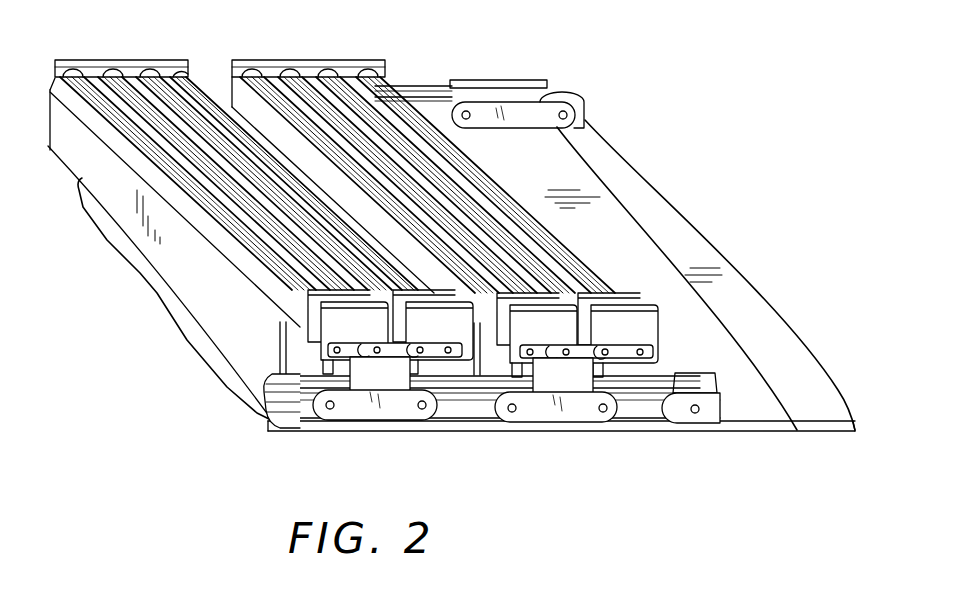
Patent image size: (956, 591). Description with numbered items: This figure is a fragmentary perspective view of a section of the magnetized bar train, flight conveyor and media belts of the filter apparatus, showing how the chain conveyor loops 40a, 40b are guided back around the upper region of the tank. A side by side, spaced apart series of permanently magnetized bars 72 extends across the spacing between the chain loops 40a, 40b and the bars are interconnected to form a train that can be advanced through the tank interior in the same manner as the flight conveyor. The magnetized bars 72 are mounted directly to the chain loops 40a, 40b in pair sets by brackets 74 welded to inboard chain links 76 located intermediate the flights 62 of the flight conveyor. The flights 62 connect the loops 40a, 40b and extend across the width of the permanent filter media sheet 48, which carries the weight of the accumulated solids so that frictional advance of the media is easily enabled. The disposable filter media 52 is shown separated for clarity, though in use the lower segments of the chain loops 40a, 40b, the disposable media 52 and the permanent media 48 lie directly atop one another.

The permanently magnetized bars 72 is at (108, 80).
The brackets 74 is at (457, 76).
The chain conveyor loop 40a is at (582, 407).
The chain conveyor loop 40b is at (555, 79).
The permanent filter media sheet 48 is at (610, 147).
The disposable filter media 52 is at (613, 215).
The flights 62 is at (183, 284).
The inboard chain links 76 is at (373, 410).